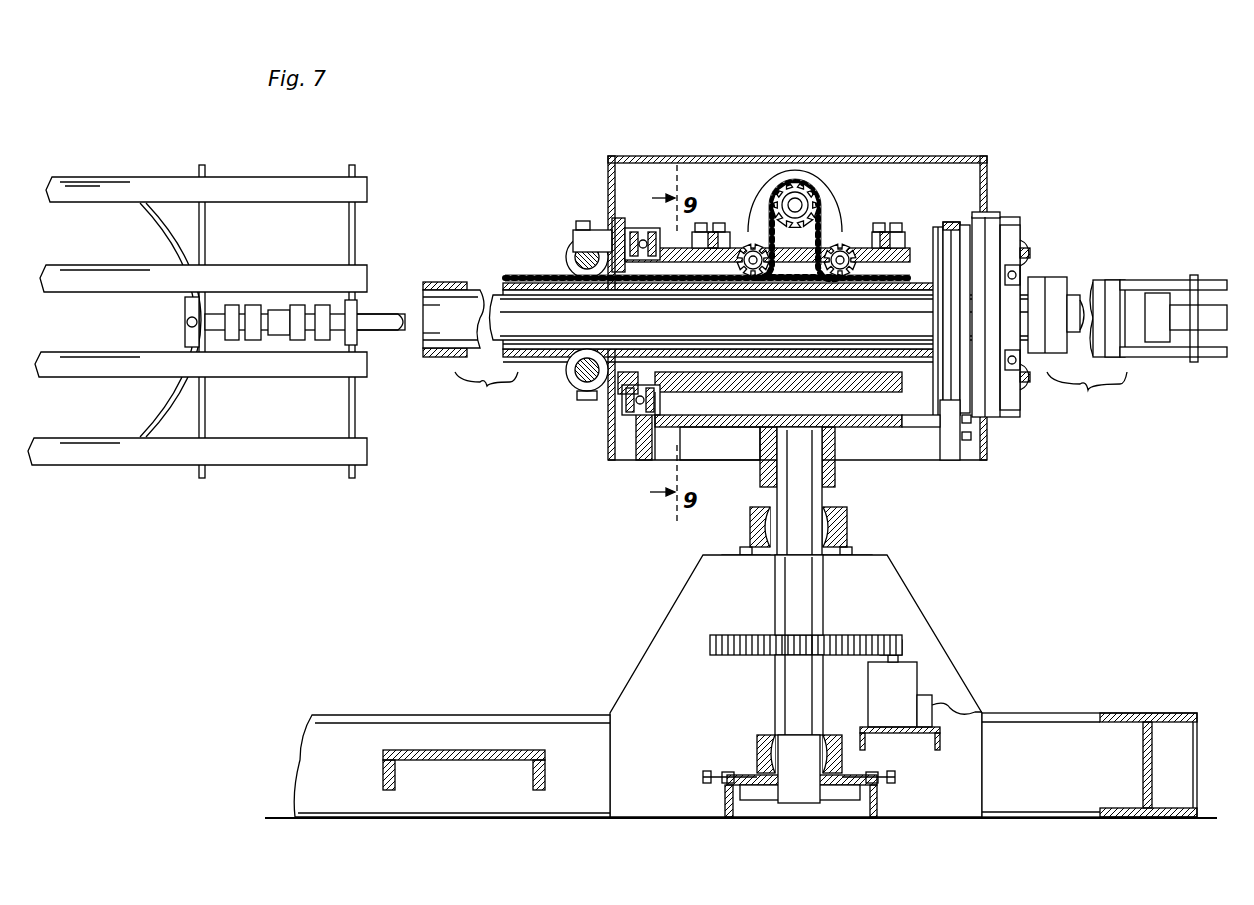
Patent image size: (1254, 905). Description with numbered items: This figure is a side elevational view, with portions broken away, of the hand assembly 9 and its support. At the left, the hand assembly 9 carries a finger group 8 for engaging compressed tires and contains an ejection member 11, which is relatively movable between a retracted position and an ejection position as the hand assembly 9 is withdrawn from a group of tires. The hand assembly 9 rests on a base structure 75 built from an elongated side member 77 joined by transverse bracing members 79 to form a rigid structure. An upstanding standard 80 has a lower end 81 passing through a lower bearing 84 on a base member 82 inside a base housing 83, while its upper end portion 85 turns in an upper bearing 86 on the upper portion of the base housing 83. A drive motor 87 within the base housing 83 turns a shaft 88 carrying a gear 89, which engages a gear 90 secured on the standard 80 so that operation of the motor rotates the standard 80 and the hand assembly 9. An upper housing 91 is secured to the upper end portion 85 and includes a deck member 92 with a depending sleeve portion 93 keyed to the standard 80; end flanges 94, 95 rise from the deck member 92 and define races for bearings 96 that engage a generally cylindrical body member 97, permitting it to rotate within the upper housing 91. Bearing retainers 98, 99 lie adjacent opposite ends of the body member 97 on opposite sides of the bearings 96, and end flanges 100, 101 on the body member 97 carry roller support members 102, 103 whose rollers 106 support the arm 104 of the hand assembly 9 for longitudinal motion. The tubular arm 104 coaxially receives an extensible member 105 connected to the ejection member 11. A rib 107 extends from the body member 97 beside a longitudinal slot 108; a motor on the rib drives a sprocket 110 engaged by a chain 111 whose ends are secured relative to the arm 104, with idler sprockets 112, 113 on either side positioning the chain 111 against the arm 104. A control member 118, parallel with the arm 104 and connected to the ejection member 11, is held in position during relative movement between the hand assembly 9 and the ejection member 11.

The finger group 8 is at (243, 183).
The hand assembly 9 is at (207, 299).
The ejection member 11 is at (162, 236).
The control member 118 is at (386, 333).
The arm 104 is at (440, 280).
The extensible member 105 is at (480, 284).
The roller support member 102 is at (600, 230).
The end flange 100 is at (628, 218).
The upper housing 91 is at (980, 156).
The rib 107 is at (833, 190).
The longitudinal slot 108 is at (800, 262).
The sprocket 110 is at (800, 192).
The idler sprocket 112 is at (748, 246).
The idler sprocket 113 is at (843, 246).
The chain 111 is at (1045, 277).
The body member 97 is at (920, 250).
The bearing retainer 98 is at (950, 222).
The end flange 95 is at (965, 225).
The roller support member 103 is at (995, 214).
The roller 106 is at (1035, 255).
The end flange 101 is at (971, 435).
The bearing retainer 99 is at (976, 215).
The bearing 96 is at (634, 396).
The deck member 92 is at (864, 410).
The end flange 94 is at (685, 465).
The sleeve portion 93 is at (760, 490).
The upper end portion 85 is at (808, 495).
The upper bearing 86 is at (847, 525).
The base housing 83 is at (966, 688).
The drive motor 87 is at (905, 685).
The shaft 88 is at (905, 660).
The gear 89 is at (905, 640).
The gear 90 is at (858, 620).
The upstanding standard 80 is at (792, 690).
The lower bearing 84 is at (757, 750).
The base member 82 is at (878, 786).
The lower end 81 is at (796, 803).
The side member 77 is at (494, 712).
The transverse bracing member 79 is at (545, 755).
The base structure 75 is at (1165, 704).